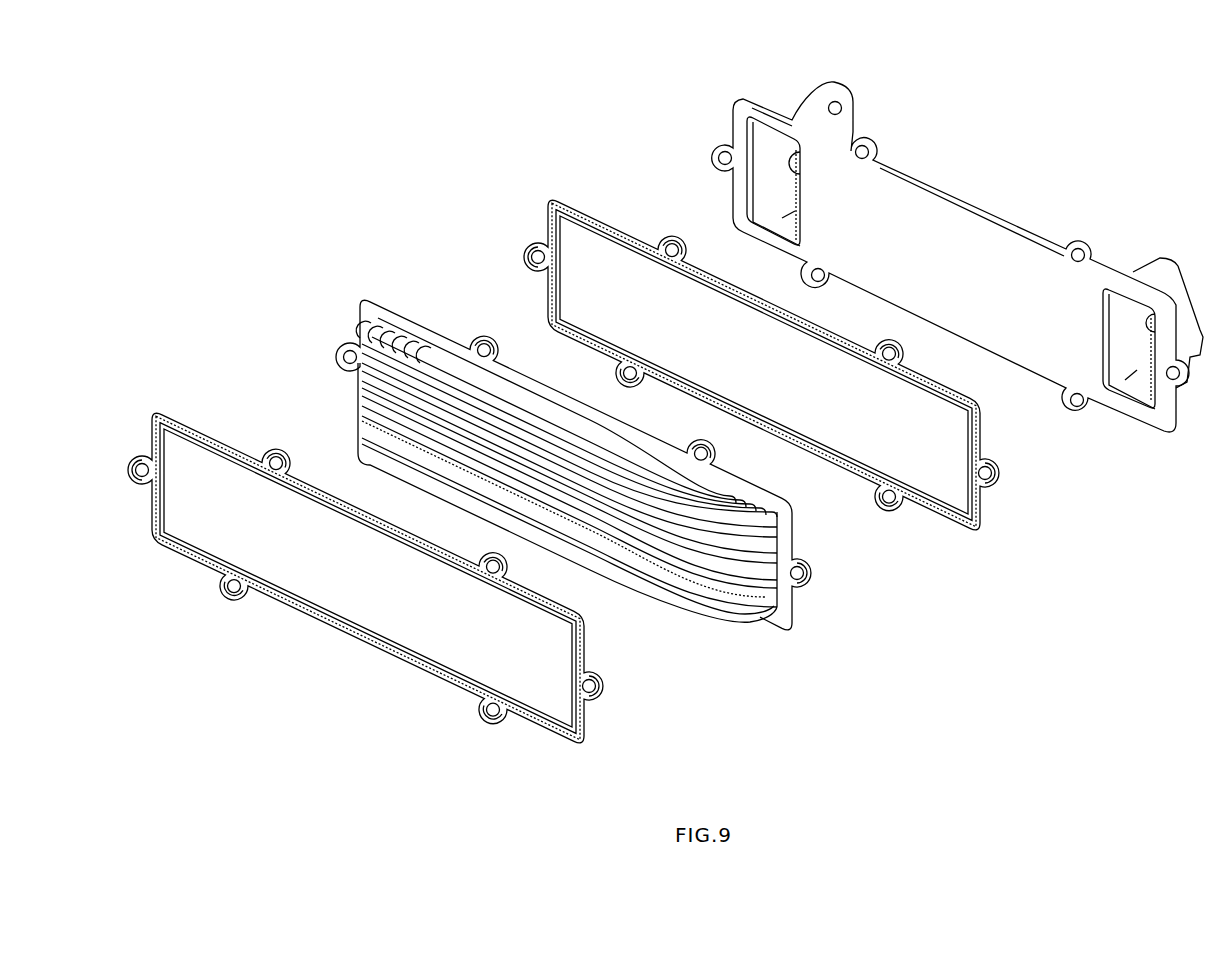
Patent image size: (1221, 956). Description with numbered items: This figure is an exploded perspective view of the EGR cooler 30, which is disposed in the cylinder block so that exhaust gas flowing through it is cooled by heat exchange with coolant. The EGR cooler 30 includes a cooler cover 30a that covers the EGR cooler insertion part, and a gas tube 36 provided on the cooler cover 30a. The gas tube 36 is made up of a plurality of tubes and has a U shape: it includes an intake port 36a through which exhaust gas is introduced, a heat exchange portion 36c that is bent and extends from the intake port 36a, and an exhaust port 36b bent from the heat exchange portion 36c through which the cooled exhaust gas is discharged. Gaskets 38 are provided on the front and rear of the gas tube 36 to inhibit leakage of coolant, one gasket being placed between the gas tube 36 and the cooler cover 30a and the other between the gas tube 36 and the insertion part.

The EGR cooler 30 is at (244, 93).
The cooler cover 30a is at (722, 88).
The gas tube 36 is at (574, 424).
The intake port 36a is at (352, 350).
The exhaust port 36b is at (747, 525).
The heat exchange portion 36c is at (523, 440).
The gaskets 38 is at (573, 740).